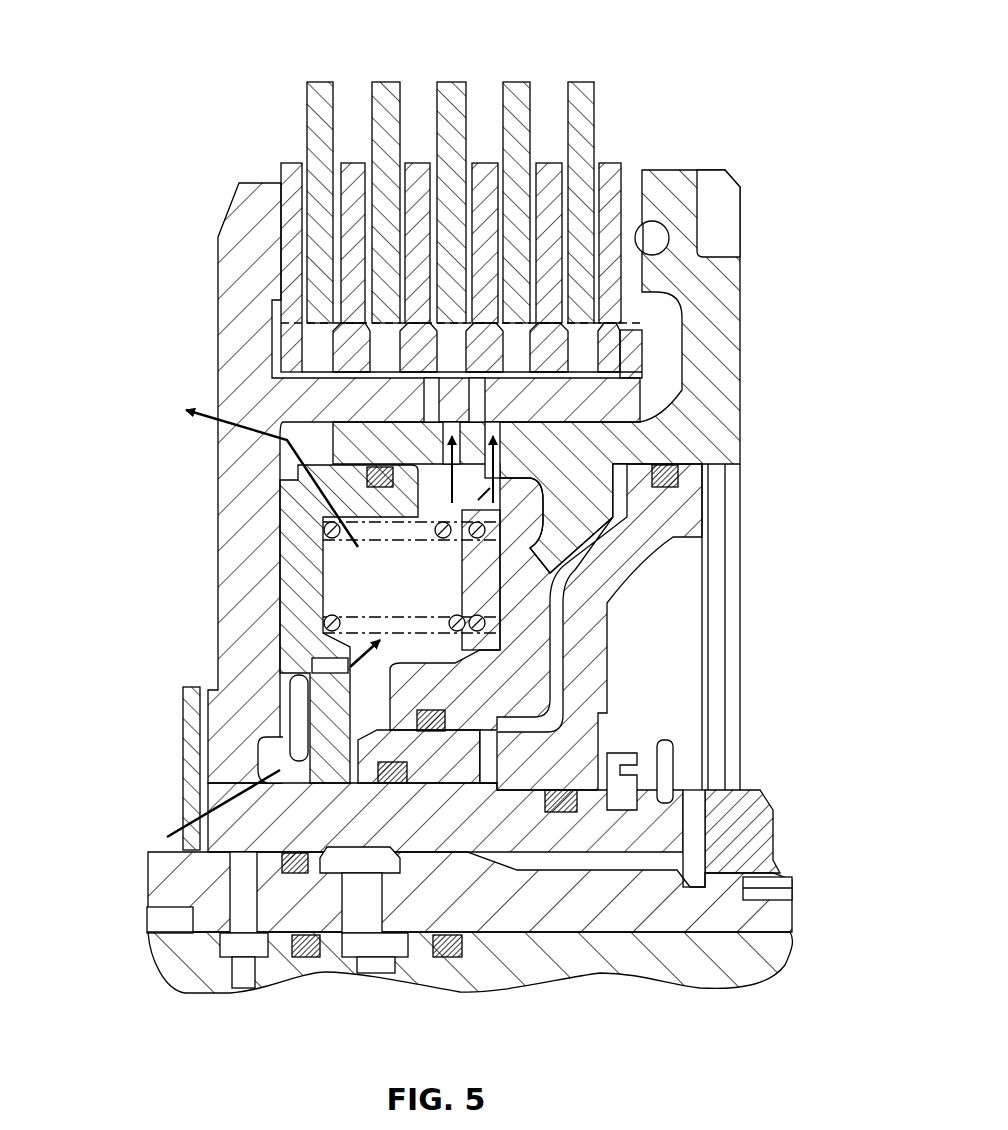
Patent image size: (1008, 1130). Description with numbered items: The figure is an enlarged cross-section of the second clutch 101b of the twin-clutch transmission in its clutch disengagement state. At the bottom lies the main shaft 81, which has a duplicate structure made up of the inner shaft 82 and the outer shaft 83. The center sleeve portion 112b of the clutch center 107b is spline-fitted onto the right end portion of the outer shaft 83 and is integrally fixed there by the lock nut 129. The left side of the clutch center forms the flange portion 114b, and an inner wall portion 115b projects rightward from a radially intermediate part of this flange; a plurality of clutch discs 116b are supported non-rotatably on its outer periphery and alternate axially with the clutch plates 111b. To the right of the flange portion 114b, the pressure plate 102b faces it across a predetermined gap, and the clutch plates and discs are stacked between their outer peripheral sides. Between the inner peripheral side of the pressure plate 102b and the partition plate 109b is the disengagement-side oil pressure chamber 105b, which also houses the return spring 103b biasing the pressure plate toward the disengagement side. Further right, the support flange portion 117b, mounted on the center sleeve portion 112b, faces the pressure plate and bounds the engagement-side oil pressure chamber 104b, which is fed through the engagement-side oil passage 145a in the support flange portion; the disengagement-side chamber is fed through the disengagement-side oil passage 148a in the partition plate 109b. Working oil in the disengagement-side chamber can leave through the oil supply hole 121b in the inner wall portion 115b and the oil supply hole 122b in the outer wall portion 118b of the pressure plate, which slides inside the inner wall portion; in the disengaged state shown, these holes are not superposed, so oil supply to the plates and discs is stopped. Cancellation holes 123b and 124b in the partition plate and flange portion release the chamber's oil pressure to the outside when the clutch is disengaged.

The second clutch 101b is at (636, 72).
The pressure plate 102b is at (710, 320).
The return spring 103b is at (325, 625).
The engagement-side oil pressure chamber 104b is at (558, 642).
The disengagement-side oil pressure chamber 105b is at (366, 591).
The clutch center 107b is at (240, 700).
The partition plate 109b is at (292, 580).
The clutch plates 111b is at (455, 95).
The center sleeve portion 112b is at (510, 830).
The flange portion 114b is at (243, 285).
The inner wall portion 115b is at (513, 352).
The clutch discs 116b is at (291, 170).
The support flange portion 117b is at (620, 566).
The outer wall portion 118b is at (330, 462).
The oil supply hole 121b is at (282, 437).
The oil supply hole 122b is at (365, 480).
The cancellation hole 123b is at (322, 528).
The cancellation hole 124b is at (275, 408).
The lock nut 129 is at (752, 835).
The engagement-side oil passage 145a is at (400, 820).
The disengagement-side oil passage 148a is at (235, 790).
The main shaft 81 is at (421, 936).
The inner shaft 82 is at (178, 975).
The outer shaft 83 is at (162, 878).